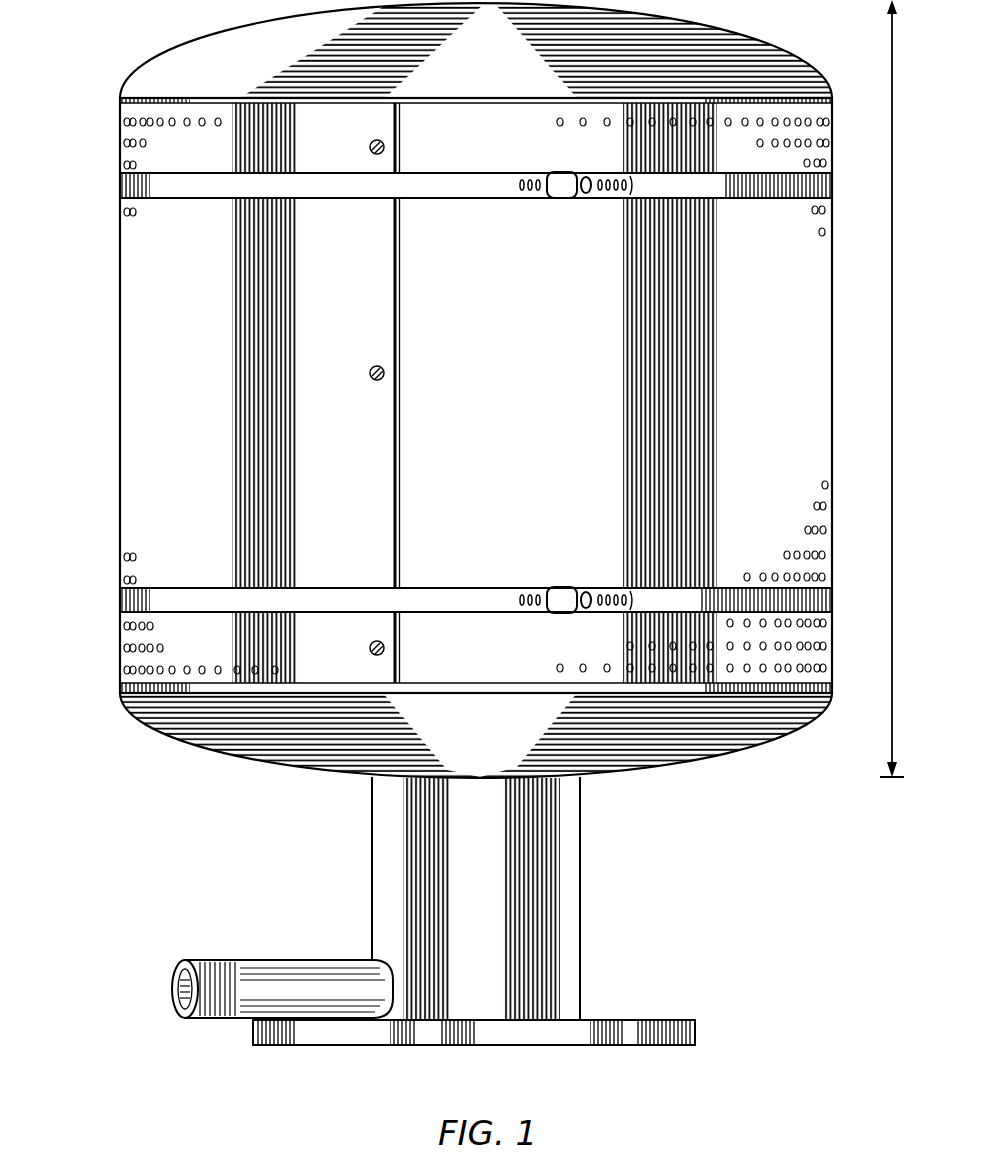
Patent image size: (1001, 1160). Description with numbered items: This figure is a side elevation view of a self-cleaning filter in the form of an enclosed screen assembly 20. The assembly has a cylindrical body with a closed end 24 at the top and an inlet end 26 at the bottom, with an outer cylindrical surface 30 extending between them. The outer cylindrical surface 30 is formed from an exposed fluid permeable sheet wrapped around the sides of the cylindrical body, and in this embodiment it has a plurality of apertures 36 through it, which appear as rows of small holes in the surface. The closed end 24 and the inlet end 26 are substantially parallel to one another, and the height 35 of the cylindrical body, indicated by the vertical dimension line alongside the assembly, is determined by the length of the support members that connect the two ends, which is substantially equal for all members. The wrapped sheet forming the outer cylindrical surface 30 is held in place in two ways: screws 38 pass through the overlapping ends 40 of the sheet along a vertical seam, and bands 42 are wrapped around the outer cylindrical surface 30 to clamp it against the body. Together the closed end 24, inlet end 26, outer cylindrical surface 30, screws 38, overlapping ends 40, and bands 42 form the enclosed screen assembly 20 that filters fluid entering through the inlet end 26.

The enclosed screen assembly 20 is at (108, 641).
The closed end 24 is at (233, 50).
The inlet end 26 is at (670, 758).
The outer cylindrical surface 30 is at (527, 408).
The height 35 is at (891, 388).
The apertures 36 is at (813, 506).
The screws 38 is at (372, 142).
The overlapping ends 40 is at (393, 468).
The bands 42 is at (495, 176).